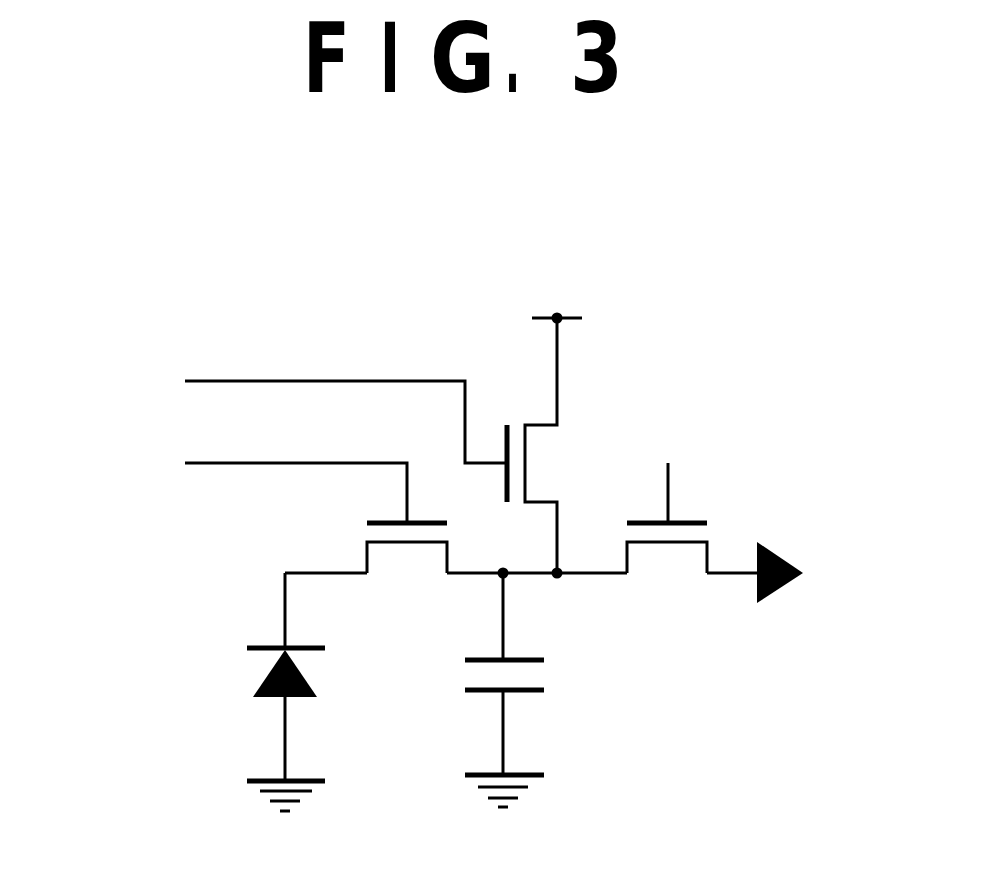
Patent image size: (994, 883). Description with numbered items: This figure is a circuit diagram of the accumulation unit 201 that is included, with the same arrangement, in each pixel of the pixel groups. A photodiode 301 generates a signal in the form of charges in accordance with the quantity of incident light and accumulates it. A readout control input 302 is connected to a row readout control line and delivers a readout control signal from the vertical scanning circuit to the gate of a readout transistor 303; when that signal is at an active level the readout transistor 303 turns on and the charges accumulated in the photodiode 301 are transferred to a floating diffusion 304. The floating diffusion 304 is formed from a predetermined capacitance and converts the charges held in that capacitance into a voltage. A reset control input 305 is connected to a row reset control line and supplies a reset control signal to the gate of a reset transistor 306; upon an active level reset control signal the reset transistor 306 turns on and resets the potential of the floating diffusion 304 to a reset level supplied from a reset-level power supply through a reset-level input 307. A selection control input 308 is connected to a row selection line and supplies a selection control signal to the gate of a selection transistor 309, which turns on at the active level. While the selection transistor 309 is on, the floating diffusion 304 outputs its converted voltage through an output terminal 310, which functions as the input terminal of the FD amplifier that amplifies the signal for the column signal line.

The accumulation unit 201 is at (748, 308).
The photodiode 301 is at (265, 677).
The readout control input 302 is at (177, 465).
The readout transistor 303 is at (357, 532).
The floating diffusion 304 is at (460, 678).
The reset control input 305 is at (177, 380).
The reset transistor 306 is at (543, 467).
The reset-level input 307 is at (525, 315).
The selection control input 308 is at (677, 475).
The selection transistor 309 is at (668, 580).
The output terminal 310 is at (778, 592).